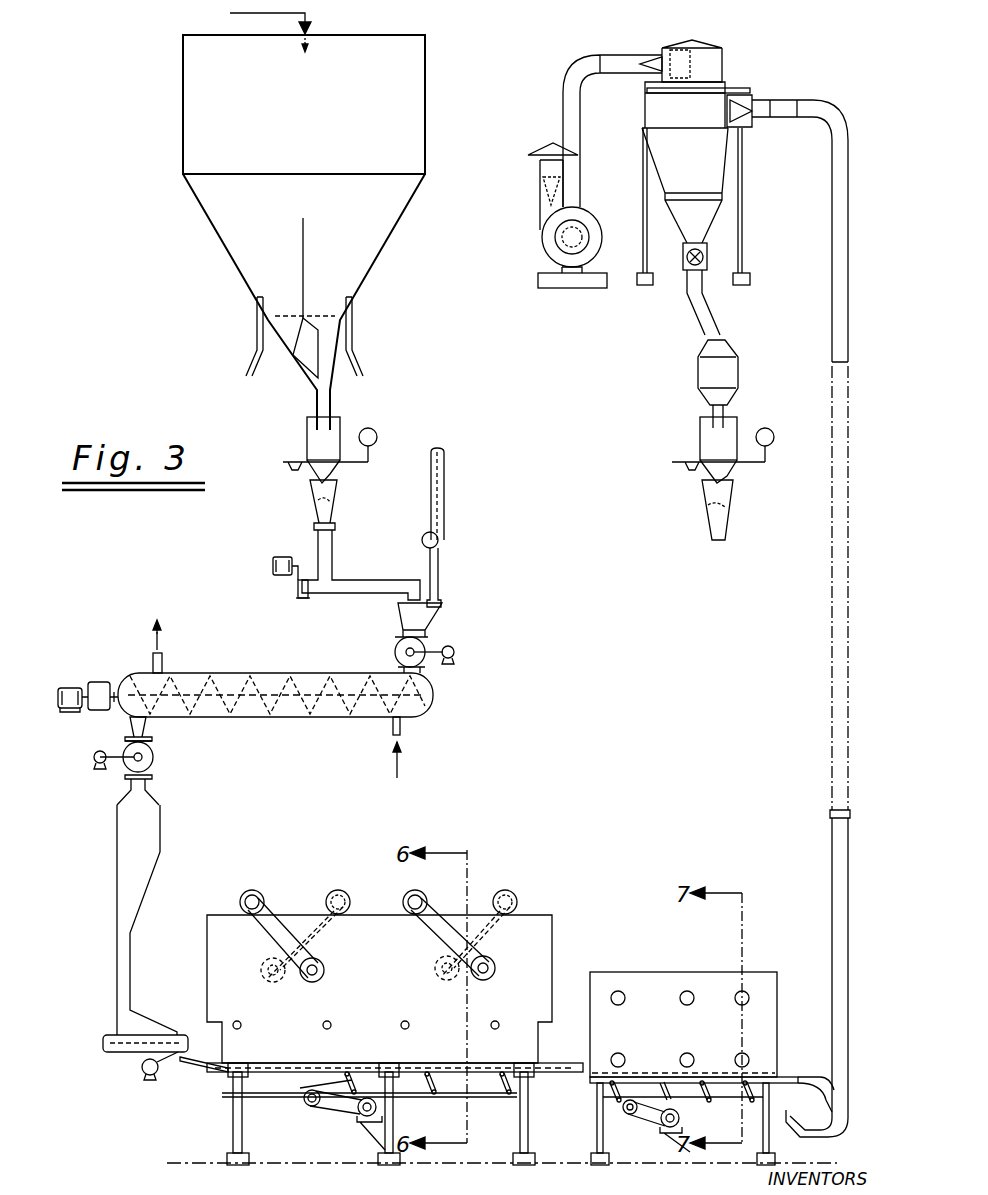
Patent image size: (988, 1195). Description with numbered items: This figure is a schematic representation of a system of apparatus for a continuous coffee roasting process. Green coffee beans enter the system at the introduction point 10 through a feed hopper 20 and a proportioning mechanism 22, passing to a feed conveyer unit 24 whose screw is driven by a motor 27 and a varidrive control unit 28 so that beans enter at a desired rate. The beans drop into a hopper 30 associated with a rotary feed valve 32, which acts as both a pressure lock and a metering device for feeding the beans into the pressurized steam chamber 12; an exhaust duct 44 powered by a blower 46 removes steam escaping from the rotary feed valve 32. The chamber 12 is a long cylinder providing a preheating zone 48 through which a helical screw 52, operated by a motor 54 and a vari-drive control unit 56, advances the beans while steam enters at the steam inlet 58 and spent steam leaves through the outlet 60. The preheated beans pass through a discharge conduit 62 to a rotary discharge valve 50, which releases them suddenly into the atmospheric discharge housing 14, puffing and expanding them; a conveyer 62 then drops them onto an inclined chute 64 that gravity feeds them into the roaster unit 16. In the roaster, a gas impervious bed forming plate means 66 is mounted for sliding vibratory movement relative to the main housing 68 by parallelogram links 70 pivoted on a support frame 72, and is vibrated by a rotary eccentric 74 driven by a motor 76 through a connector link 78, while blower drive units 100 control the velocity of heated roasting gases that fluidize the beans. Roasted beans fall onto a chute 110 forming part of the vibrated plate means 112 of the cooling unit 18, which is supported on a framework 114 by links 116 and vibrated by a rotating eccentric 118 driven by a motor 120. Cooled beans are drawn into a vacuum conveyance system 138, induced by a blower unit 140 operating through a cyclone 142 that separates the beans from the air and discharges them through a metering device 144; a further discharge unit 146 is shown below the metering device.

The green coffee bean introduction point 10 is at (312, 14).
The pressurized steam chamber 12 is at (245, 705).
The discharge housing 14 is at (153, 835).
The roaster unit 16 is at (379, 954).
The cooling unit 18 is at (778, 968).
The feed hopper 20 is at (228, 222).
The proportioning mechanism 22 is at (310, 447).
The feed conveyer unit 24 is at (365, 585).
The motor 27 is at (283, 558).
The varidrive control unit 28 is at (298, 592).
The hopper 30 is at (400, 618).
The rotary feed valve 32 is at (425, 645).
The exhaust duct 44 is at (440, 577).
The blower 46 is at (440, 540).
The preheating zone 48 is at (275, 704).
The rotary discharge valve 50 is at (153, 757).
The helical screw 52 is at (283, 680).
The motor 54 is at (70, 688).
The vari-drive control unit 56 is at (98, 688).
The steam inlet 58 is at (402, 735).
The outlet 60 is at (163, 667).
The discharge conduit / feed conveyer 62 is at (132, 722).
The inclined chute 64 is at (200, 1068).
The bed forming plate means 66 is at (292, 1075).
The main housing 68 is at (225, 950).
The parallelogram links 70 is at (500, 1080).
The support frame 72 is at (492, 1093).
The rotary eccentric 74 is at (315, 1108).
The motor 76 is at (380, 1110).
The connector link 78 is at (345, 1072).
The drive units 100 is at (255, 890).
The chute 110 is at (592, 1080).
The plate means 112 is at (628, 1085).
The framework 114 is at (760, 1100).
The links 116 is at (735, 1090).
The rotating eccentric 118 is at (625, 1105).
The motor 120 is at (665, 1125).
The vacuum conveyance system 138 is at (835, 855).
The blower unit 140 is at (560, 235).
The cyclone 142 is at (710, 105).
The metering device 144 is at (705, 372).
The discharge feeder 146 is at (722, 512).